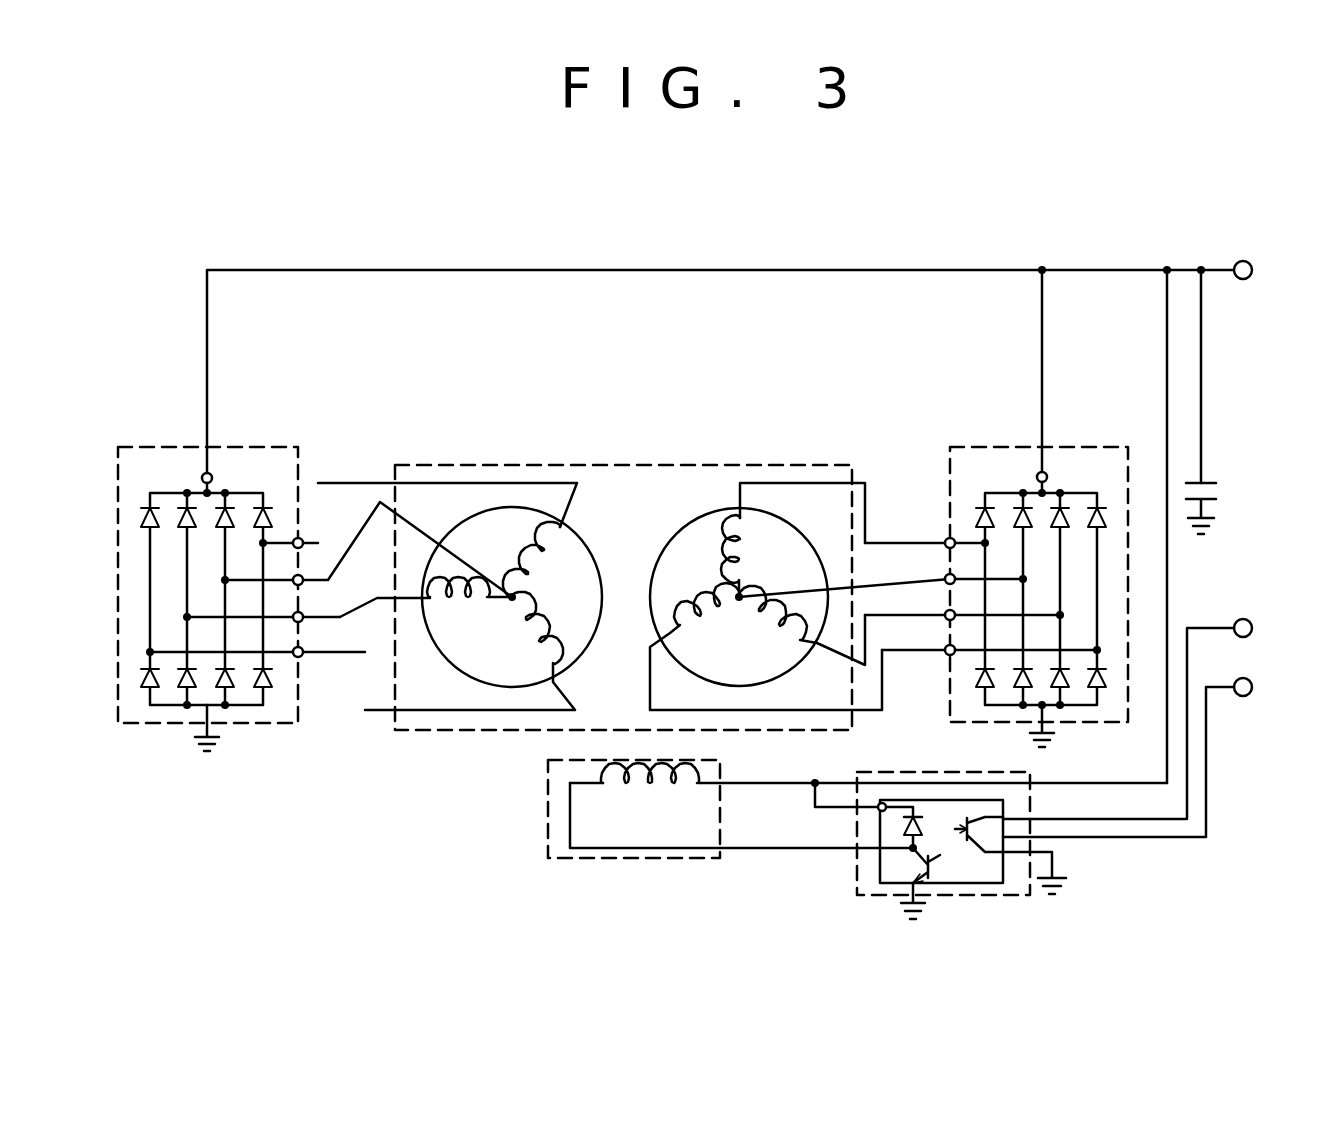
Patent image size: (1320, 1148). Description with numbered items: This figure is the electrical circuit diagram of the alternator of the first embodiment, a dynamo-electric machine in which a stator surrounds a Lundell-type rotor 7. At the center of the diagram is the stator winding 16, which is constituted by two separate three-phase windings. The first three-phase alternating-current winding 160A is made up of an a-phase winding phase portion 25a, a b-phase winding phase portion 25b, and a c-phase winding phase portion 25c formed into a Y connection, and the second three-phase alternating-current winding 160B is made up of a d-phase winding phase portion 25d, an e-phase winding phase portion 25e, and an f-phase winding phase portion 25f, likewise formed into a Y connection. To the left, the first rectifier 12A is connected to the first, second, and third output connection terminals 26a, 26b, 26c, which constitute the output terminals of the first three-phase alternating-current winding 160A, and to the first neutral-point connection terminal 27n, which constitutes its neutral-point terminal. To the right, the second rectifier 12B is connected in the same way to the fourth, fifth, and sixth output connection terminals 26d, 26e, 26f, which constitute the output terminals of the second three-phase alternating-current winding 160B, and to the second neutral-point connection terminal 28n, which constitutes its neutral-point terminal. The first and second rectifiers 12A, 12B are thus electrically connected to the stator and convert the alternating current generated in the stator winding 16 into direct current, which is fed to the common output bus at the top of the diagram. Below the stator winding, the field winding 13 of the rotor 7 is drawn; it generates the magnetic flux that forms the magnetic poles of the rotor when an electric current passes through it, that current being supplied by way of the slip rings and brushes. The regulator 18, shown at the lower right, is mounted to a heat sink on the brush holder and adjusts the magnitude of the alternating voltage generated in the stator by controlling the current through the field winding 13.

The rotor 7 is at (823, 815).
The first rectifier 12A is at (150, 443).
The second rectifier 12B is at (1090, 443).
The field winding 13 is at (617, 802).
The stator winding 16 is at (745, 393).
The first three-phase alternating-current winding 160A is at (488, 554).
The second three-phase alternating-current winding 160B is at (743, 555).
The regulator 18 is at (870, 867).
The a-phase winding phase portion 25a is at (556, 548).
The b-phase winding phase portion 25b is at (563, 650).
The c-phase winding phase portion 25c is at (452, 630).
The d-phase winding phase portion 25d is at (767, 538).
The e-phase winding phase portion 25e is at (777, 650).
The f-phase winding phase portion 25f is at (680, 603).
The first output connection terminal 26a is at (288, 535).
The second output connection terminal 26b is at (293, 665).
The third output connection terminal 26c is at (312, 628).
The fourth output connection terminal 26d is at (940, 530).
The fifth output connection terminal 26e is at (940, 627).
The sixth output connection terminal 26f is at (955, 663).
The first neutral-point connection terminal 27n is at (343, 530).
The second neutral-point connection terminal 28n is at (947, 567).